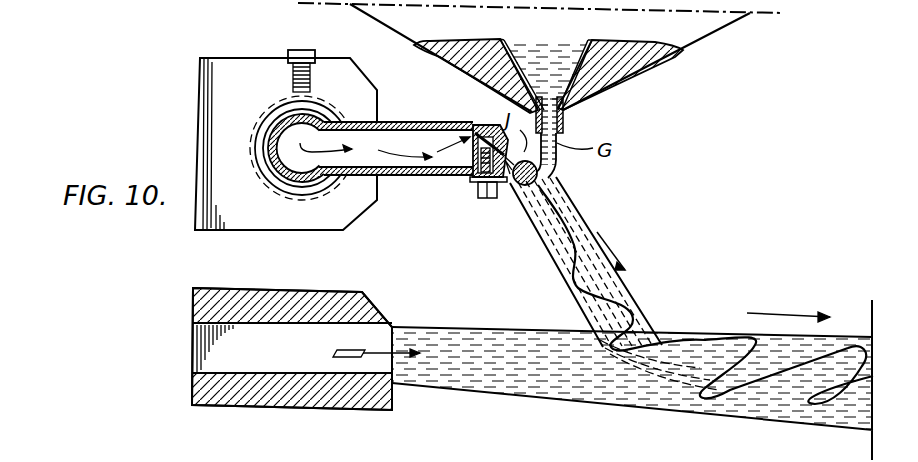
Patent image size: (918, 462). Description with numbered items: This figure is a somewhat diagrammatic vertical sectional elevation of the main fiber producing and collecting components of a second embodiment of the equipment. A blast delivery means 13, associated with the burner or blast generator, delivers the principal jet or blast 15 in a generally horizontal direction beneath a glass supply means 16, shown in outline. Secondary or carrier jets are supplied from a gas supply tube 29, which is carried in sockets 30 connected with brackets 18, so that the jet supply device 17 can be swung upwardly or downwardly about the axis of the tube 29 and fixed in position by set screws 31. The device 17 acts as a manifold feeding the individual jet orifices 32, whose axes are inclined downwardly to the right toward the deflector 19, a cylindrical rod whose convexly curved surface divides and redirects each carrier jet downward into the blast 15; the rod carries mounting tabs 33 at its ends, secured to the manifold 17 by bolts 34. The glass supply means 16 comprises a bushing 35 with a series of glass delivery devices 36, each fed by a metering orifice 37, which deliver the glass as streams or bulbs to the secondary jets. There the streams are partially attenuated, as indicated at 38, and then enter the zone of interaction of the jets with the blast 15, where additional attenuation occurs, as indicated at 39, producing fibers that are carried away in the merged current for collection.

The blast delivery means 13 is at (292, 300).
The principal jet or blast 15 is at (450, 340).
The glass supply means 16 is at (737, 26).
The jet supply device 17 is at (383, 125).
The brackets 18 is at (220, 82).
The deflector element 19 is at (550, 175).
The gas supply tube 29 is at (280, 127).
The sockets 30 is at (287, 180).
The set screws 31 is at (310, 80).
The jet orifices 32 is at (483, 127).
The mounting tabs 33 is at (477, 182).
The bolts 34 is at (488, 198).
The bushing 35 is at (627, 62).
The glass delivery devices 36 is at (563, 117).
The metering orifice 37 is at (548, 87).
The partially attenuated streams 38 is at (583, 233).
The additional attenuation 39 is at (690, 340).